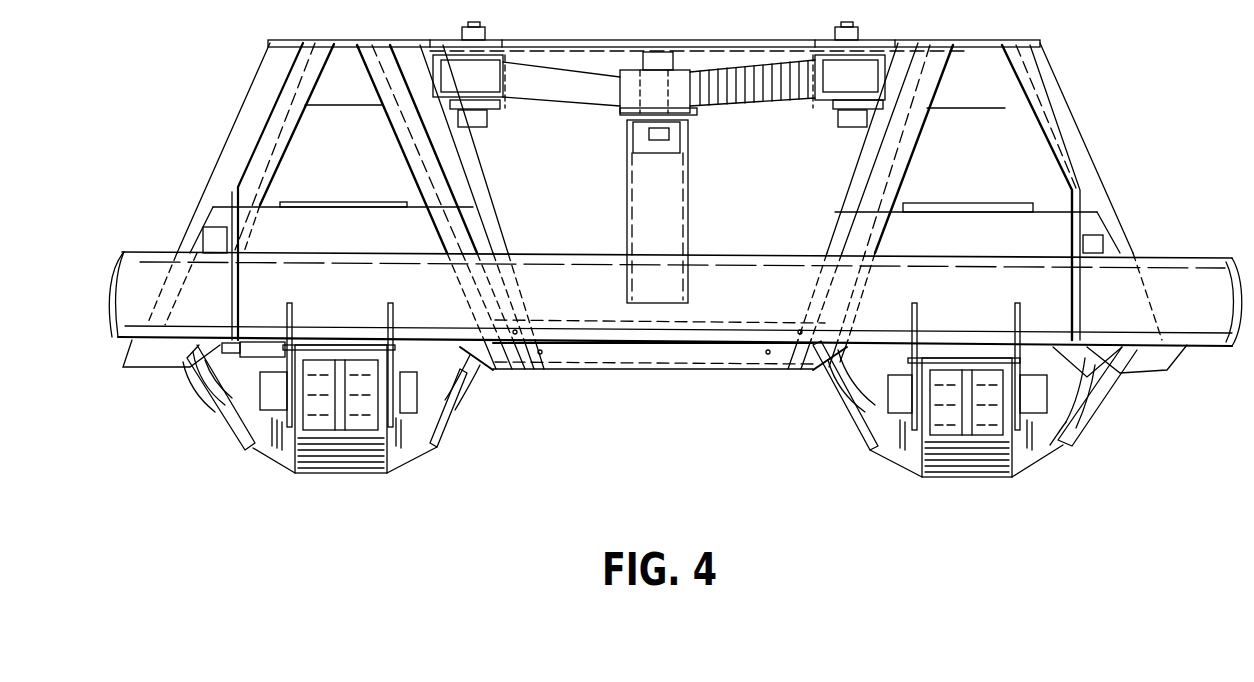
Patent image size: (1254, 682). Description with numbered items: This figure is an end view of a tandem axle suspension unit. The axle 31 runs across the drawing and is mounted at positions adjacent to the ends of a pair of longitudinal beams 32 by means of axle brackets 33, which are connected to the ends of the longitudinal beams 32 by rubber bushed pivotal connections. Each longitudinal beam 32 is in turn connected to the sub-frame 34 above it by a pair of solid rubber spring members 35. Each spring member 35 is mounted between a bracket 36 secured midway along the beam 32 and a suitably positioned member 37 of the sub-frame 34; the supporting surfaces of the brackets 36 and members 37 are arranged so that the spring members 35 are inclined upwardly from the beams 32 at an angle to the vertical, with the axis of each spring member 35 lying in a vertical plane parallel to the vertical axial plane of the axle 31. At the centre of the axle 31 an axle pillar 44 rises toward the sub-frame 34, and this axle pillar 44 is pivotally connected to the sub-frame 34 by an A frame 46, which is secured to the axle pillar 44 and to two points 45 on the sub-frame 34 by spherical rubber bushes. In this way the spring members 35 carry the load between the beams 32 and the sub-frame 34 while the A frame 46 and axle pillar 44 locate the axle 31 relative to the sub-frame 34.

The axle 31 is at (147, 277).
The longitudinal beam 32 is at (322, 462).
The axle bracket 33 is at (395, 440).
The sub-frame 34 is at (305, 57).
The solid rubber spring member 35 is at (222, 396).
The bracket 36 is at (265, 445).
The member of the sub-frame 37 is at (263, 92).
The axle pillar 44 is at (648, 188).
The point on the subframe 45 is at (490, 42).
The A frame 46 is at (570, 80).